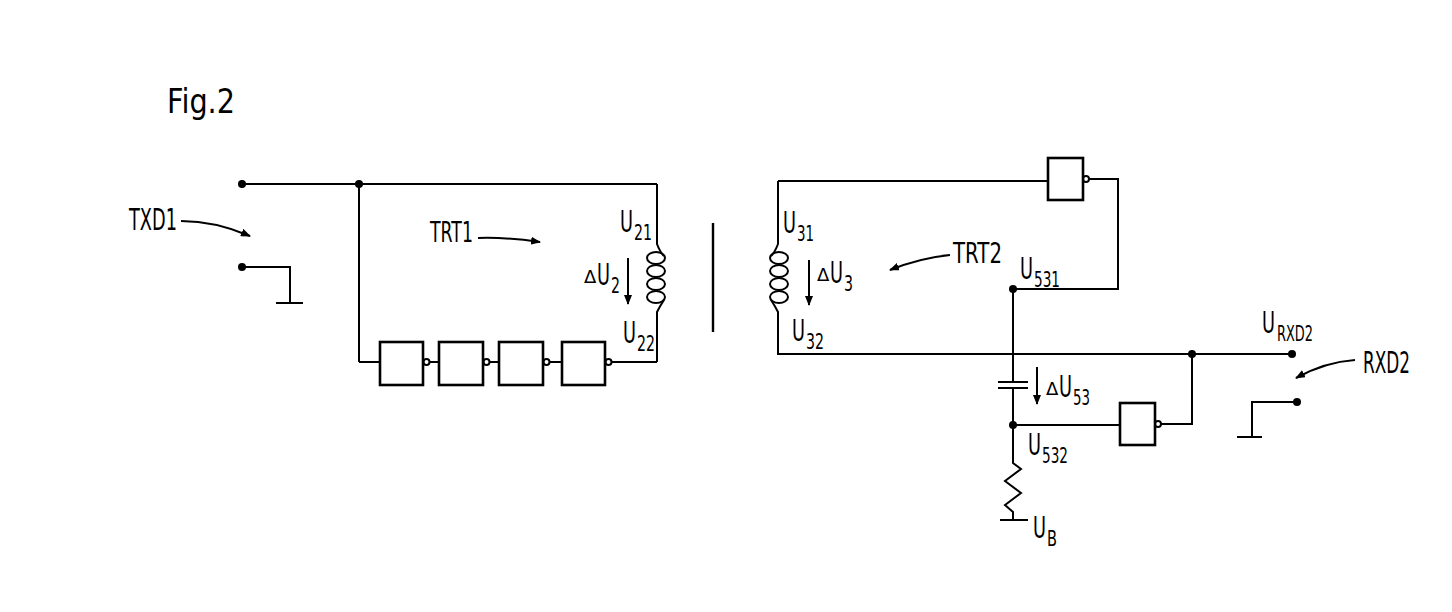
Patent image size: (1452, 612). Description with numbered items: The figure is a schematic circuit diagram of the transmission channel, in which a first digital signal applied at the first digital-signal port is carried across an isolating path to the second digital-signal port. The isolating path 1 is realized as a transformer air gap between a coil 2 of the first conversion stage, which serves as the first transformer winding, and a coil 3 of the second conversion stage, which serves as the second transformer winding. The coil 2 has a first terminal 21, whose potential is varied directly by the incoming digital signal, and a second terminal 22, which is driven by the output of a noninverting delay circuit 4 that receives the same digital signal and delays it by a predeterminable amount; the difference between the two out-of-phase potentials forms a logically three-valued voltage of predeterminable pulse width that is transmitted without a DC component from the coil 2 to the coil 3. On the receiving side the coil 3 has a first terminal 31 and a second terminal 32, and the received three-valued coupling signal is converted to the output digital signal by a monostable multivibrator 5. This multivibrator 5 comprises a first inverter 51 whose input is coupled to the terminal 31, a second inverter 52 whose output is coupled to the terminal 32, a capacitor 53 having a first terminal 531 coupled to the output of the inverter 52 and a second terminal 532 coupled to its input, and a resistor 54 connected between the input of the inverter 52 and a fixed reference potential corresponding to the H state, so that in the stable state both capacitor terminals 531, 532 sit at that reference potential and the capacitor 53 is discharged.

The transformer core 1 is at (705, 163).
The coil 2 is at (650, 257).
The first terminal 21 is at (659, 238).
The second terminal 22 is at (659, 313).
The coil 3 is at (783, 256).
The first terminal 31 is at (777, 238).
The second terminal 32 is at (777, 313).
The noninverting delay circuit 4 is at (405, 414).
The monostable multivibrator 5 is at (927, 163).
The first inverter 51 is at (1084, 165).
The second inverter 52 is at (1142, 440).
The capacitor 53 is at (1000, 390).
The first terminal 531 is at (1011, 292).
The second terminal 532 is at (1010, 428).
The resistor 54 is at (1008, 485).